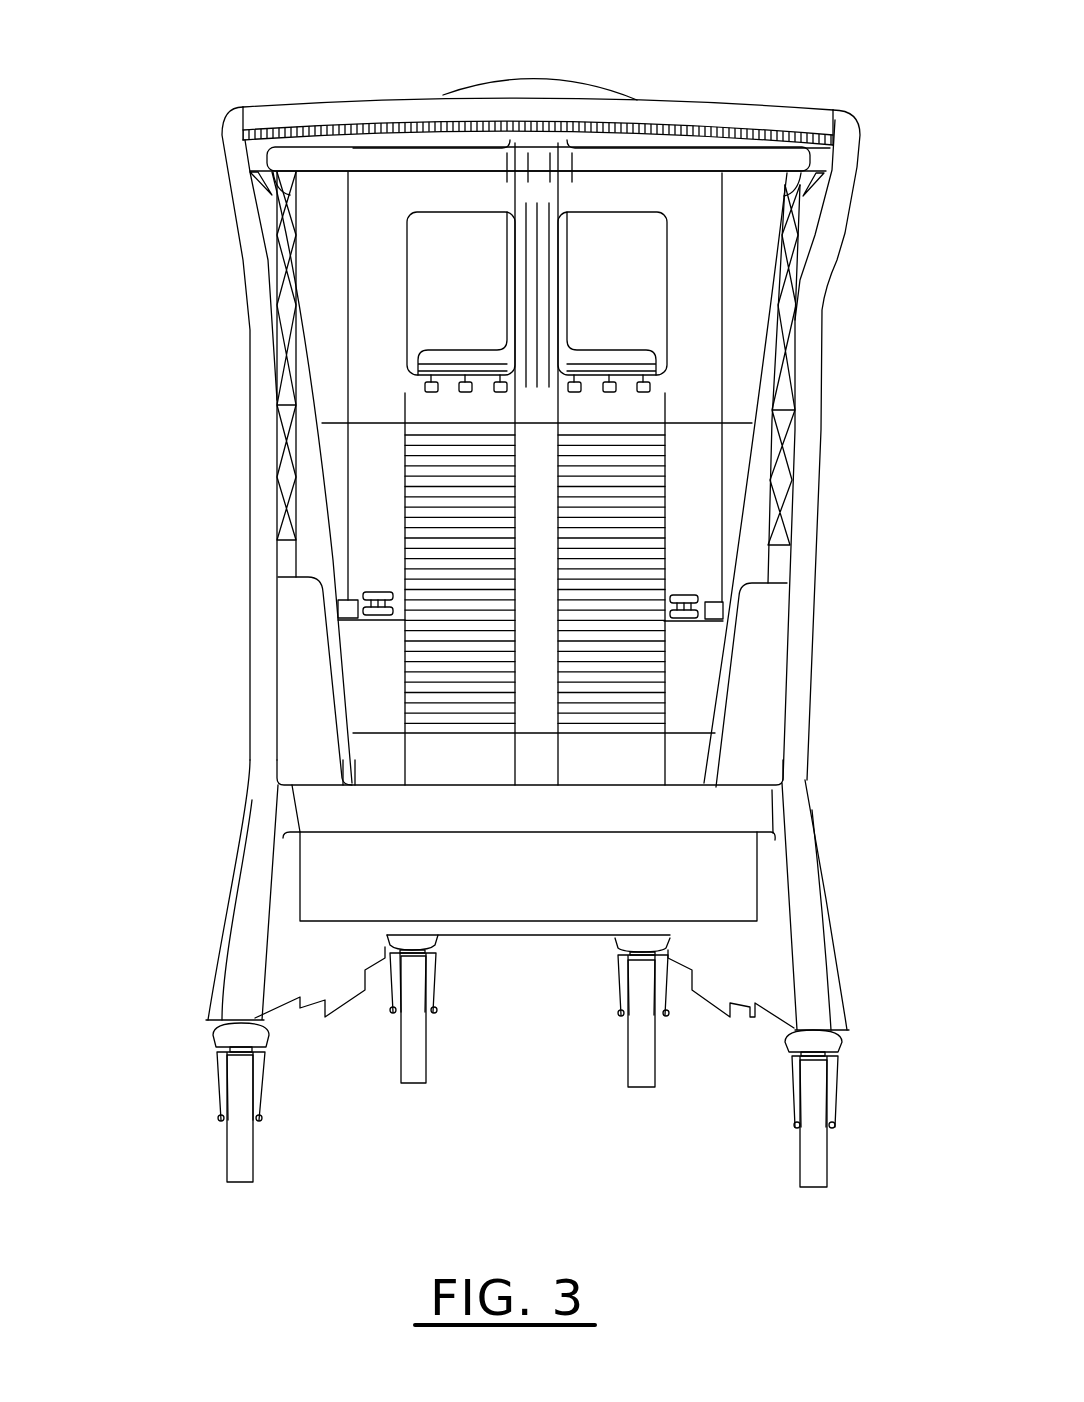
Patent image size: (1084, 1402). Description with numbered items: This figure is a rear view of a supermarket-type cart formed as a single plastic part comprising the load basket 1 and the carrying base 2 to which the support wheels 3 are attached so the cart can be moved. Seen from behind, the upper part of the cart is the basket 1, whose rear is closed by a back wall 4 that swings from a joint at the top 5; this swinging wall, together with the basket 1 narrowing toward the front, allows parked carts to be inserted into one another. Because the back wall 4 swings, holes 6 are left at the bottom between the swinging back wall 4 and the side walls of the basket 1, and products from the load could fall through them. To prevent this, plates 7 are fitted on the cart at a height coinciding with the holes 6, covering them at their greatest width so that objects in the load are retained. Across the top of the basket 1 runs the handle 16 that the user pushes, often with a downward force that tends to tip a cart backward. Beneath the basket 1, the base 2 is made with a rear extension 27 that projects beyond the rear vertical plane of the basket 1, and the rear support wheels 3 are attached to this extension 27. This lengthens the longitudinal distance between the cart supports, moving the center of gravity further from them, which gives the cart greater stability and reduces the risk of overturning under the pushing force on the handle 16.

The load basket 1 is at (820, 381).
The carrying base 2 is at (686, 884).
The support wheels 3 is at (410, 1045).
The back wall 4 is at (368, 387).
The joint at the top 5 is at (745, 160).
The holes 6 is at (320, 553).
The plates 7 is at (298, 682).
The handle 16 is at (392, 112).
The rear extension 27 is at (247, 927).